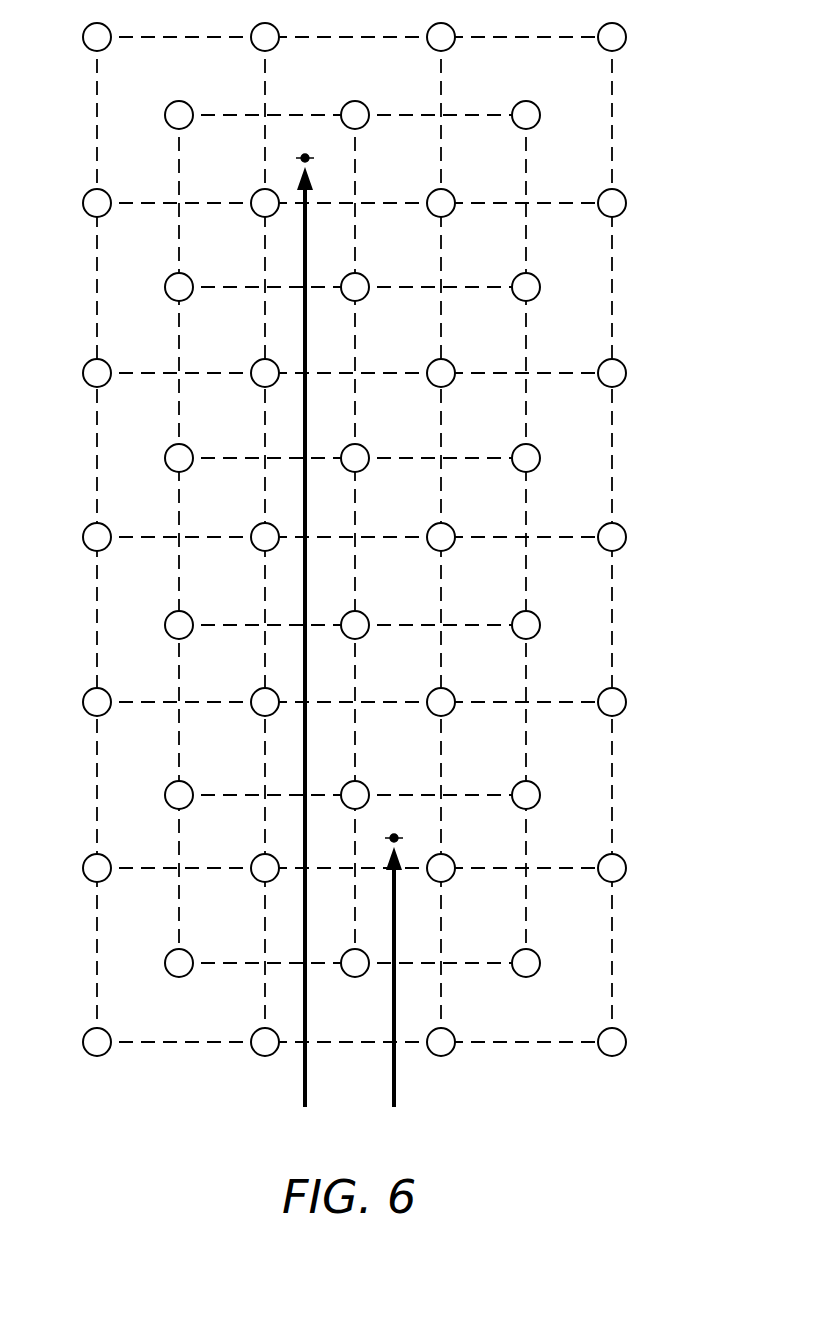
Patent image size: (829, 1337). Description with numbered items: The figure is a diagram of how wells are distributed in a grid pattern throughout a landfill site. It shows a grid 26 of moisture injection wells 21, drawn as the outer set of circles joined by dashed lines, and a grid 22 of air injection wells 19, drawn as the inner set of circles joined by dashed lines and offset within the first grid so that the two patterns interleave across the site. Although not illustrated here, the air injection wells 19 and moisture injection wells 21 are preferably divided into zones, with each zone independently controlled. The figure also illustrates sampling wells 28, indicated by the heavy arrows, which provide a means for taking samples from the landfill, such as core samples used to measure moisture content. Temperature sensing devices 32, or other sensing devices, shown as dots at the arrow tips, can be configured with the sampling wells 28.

The air injection wells 19 is at (180, 978).
The moisture injection wells 21 is at (452, 692).
The grid of air injection wells 22 is at (239, 112).
The grid of moisture injection wells 26 is at (443, 88).
The sampling wells 28 is at (306, 128).
The temperature sensing devices 32 is at (310, 158).